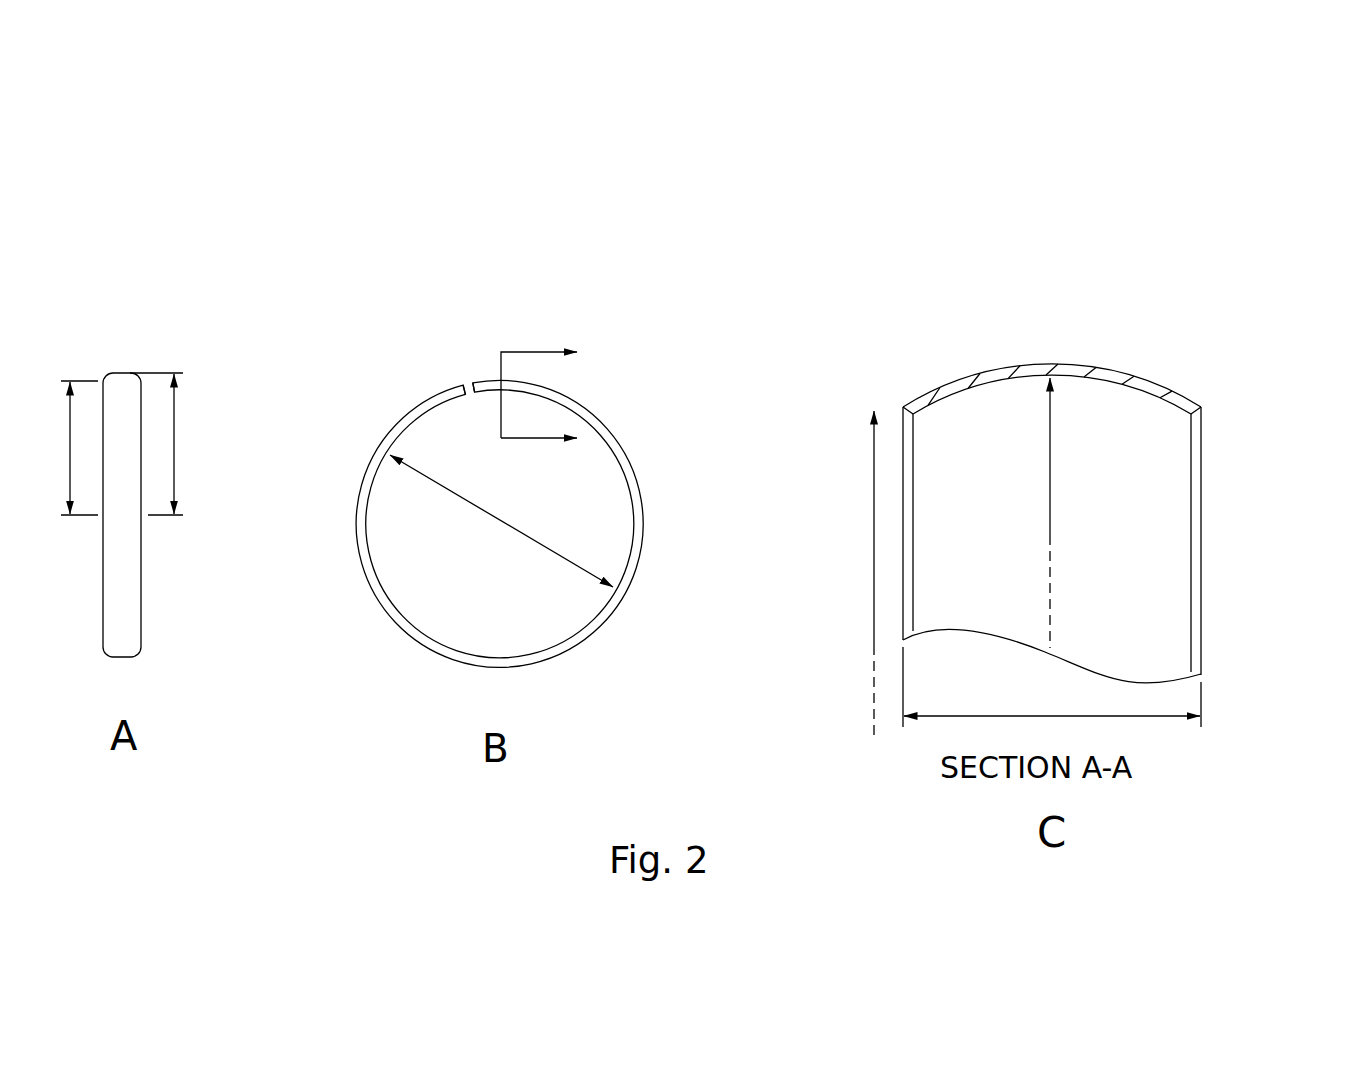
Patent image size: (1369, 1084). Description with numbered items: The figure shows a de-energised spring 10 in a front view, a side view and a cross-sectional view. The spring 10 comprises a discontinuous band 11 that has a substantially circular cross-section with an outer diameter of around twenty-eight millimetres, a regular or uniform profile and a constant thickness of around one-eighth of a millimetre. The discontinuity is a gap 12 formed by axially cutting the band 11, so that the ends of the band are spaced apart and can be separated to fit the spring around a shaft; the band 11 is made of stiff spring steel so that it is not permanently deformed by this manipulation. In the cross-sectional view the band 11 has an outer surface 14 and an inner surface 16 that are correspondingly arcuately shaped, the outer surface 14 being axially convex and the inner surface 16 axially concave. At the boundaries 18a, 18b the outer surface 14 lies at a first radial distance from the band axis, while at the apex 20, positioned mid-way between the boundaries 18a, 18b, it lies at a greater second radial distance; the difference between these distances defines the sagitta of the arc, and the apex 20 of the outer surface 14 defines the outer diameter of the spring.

The spring 10 is at (705, 426).
The discontinuous band 11 is at (638, 563).
The gap 12 is at (462, 384).
The outer surface 14 is at (964, 359).
The inner surface 16 is at (1168, 418).
The boundary 18a is at (903, 406).
The boundary 18b is at (1201, 408).
The apex 20 is at (1055, 364).